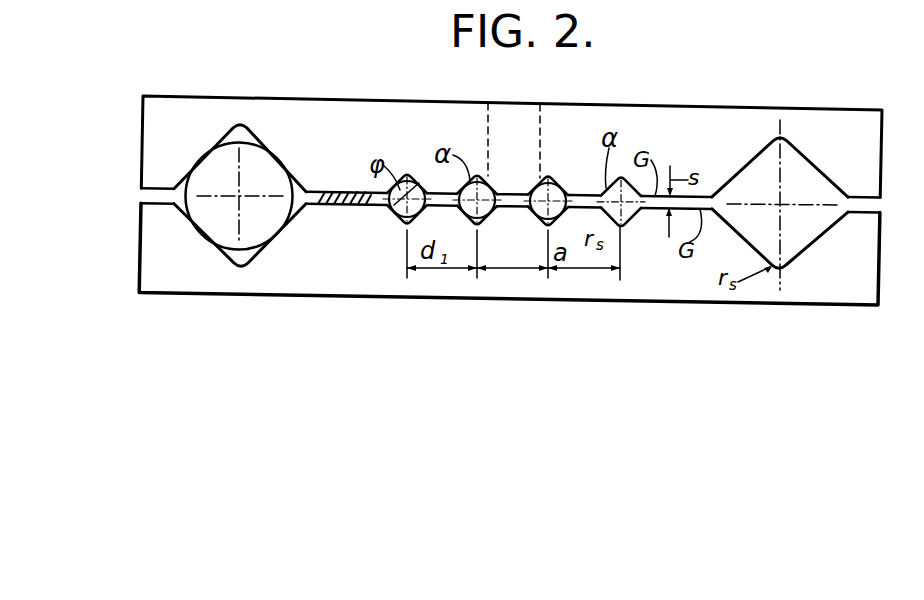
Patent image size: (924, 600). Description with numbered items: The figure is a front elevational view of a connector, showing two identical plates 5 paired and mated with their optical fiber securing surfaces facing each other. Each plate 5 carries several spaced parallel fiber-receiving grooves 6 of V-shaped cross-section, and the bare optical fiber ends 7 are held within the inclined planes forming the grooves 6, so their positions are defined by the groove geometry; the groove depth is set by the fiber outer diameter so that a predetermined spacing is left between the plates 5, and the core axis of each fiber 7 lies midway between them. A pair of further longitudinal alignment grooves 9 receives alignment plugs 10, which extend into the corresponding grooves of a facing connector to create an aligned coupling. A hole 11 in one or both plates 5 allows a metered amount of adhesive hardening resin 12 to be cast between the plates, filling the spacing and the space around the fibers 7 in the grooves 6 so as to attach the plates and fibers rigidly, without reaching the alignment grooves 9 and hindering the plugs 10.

The plate 5 is at (310, 108).
The fiber-receiving groove 6 is at (560, 178).
The optical fiber bare end 7 is at (535, 214).
The alignment groove 9 is at (190, 173).
The alignment plug 10 is at (215, 228).
The hole 11 is at (545, 118).
The adhesive hardening resin 12 is at (343, 190).